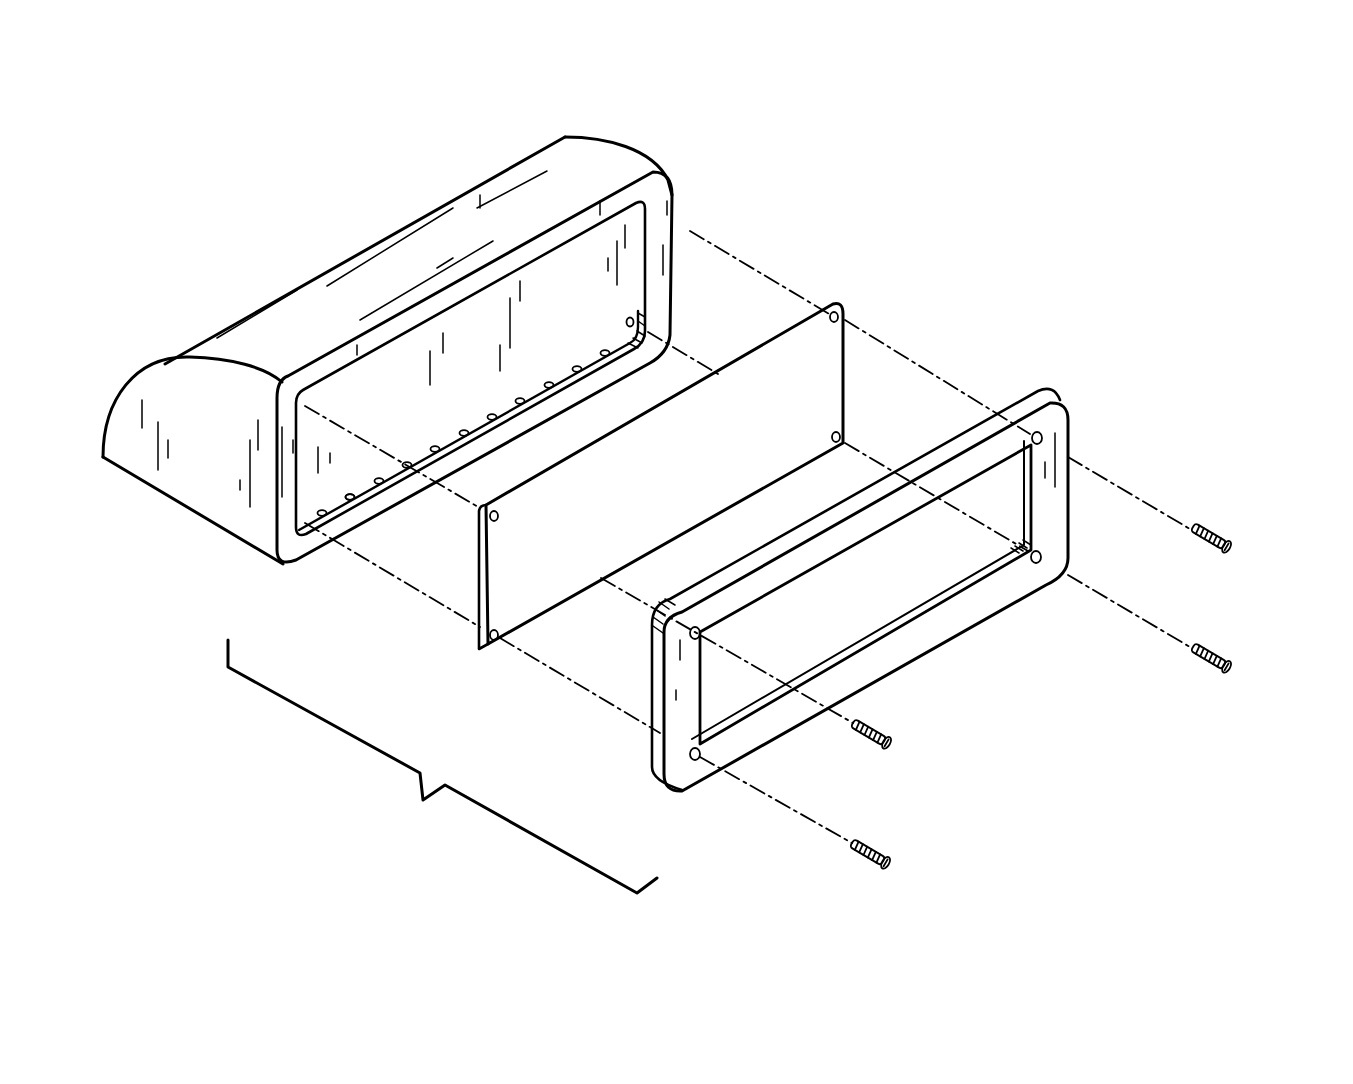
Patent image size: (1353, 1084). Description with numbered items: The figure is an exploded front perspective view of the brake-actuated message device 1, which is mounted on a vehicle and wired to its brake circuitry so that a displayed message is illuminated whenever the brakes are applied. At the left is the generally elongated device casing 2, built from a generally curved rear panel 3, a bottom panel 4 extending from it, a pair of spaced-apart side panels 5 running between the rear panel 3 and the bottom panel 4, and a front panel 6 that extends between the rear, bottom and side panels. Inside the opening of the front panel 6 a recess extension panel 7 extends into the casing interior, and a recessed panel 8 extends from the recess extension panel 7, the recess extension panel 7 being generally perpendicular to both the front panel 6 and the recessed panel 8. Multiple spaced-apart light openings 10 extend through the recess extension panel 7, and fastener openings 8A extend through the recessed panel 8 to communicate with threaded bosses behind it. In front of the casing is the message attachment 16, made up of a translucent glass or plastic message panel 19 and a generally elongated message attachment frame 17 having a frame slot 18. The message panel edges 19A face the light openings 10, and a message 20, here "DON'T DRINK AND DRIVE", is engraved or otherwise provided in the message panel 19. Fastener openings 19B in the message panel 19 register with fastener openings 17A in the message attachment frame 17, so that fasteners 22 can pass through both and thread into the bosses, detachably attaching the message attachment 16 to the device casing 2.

The brake-actuated message device 1 is at (983, 174).
The device casing 2 is at (215, 310).
The rear panel 3 is at (300, 298).
The bottom panel 4 is at (239, 537).
The side panels 5 is at (170, 473).
The front panel 6 is at (652, 180).
The recess extension panel 7 is at (552, 386).
The recessed panel 8 is at (478, 381).
The fastener openings 8A is at (641, 320).
The light openings 10 is at (354, 497).
The message attachment 16 is at (1087, 481).
The message attachment frame 17 is at (1053, 518).
The fastener openings 17A is at (1042, 438).
The frame slot 18 is at (938, 603).
The message panel 19 is at (772, 339).
The message panel edges 19A is at (843, 390).
The fastener openings 19B is at (843, 317).
The message 20 is at (700, 507).
The fasteners 22 is at (1232, 553).